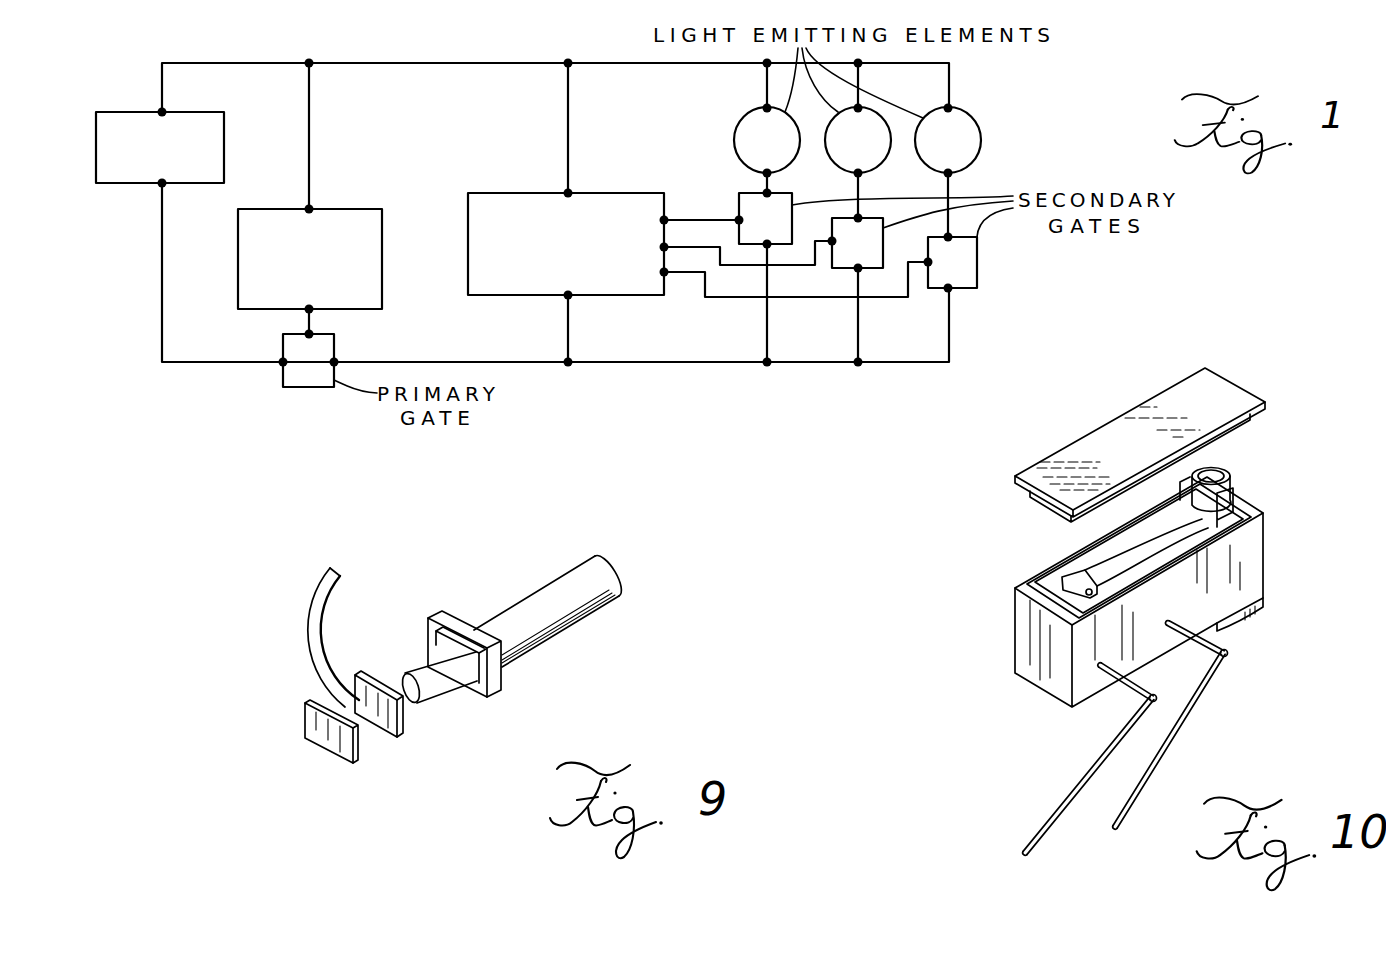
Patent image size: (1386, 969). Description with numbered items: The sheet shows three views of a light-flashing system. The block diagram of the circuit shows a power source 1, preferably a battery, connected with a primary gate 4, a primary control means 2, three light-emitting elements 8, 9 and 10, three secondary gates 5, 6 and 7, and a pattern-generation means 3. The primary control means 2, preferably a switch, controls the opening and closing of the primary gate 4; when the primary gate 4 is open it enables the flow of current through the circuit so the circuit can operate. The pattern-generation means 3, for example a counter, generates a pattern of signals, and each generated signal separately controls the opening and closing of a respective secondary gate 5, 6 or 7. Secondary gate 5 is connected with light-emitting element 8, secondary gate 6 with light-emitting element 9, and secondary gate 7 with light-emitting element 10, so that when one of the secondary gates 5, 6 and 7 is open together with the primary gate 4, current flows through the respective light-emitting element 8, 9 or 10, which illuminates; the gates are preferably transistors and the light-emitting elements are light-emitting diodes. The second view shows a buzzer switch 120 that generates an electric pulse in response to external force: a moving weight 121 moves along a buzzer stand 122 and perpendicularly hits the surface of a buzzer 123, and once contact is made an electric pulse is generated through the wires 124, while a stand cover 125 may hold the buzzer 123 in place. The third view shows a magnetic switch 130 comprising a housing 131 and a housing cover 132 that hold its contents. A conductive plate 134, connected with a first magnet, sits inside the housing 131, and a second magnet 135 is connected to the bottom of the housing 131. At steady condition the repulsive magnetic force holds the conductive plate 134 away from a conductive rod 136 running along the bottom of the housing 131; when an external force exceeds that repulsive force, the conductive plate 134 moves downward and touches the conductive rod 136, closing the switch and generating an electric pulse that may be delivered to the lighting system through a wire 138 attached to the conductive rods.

In FIG. 1, the power source 1 is at (218, 112).
In FIG. 1, the primary control means 2 is at (362, 209).
In FIG. 1, the pattern-generation means 3 is at (513, 193).
In FIG. 1, the primary gate 4 is at (282, 387).
In FIG. 1, the secondary gate 5 is at (739, 201).
In FIG. 1, the secondary gate 6 is at (839, 262).
In FIG. 1, the secondary gate 7 is at (977, 288).
In FIG. 1, the light-emitting element 8 is at (740, 120).
In FIG. 1, the light-emitting element 9 is at (835, 170).
In FIG. 1, the light-emitting element 10 is at (981, 125).
In FIG. 9, the buzzer switch 120 is at (597, 528).
In FIG. 9, the moving weight 121 is at (448, 684).
In FIG. 9, the buzzer stand 122 is at (561, 633).
In FIG. 9, the buzzer 123 is at (383, 738).
In FIG. 9, the wires 124 is at (338, 586).
In FIG. 9, the stand cover 125 is at (330, 742).
In FIG. 10, the magnetic switch 130 is at (1280, 386).
In FIG. 10, the housing 131 is at (1020, 680).
In FIG. 10, the housing cover 132 is at (1097, 437).
In FIG. 10, the conductive plate 134 is at (1093, 567).
In FIG. 10, the second magnet 135 is at (1262, 611).
In FIG. 10, the conductive rod 136 is at (1218, 640).
In FIG. 10, the wire 138 is at (1127, 800).